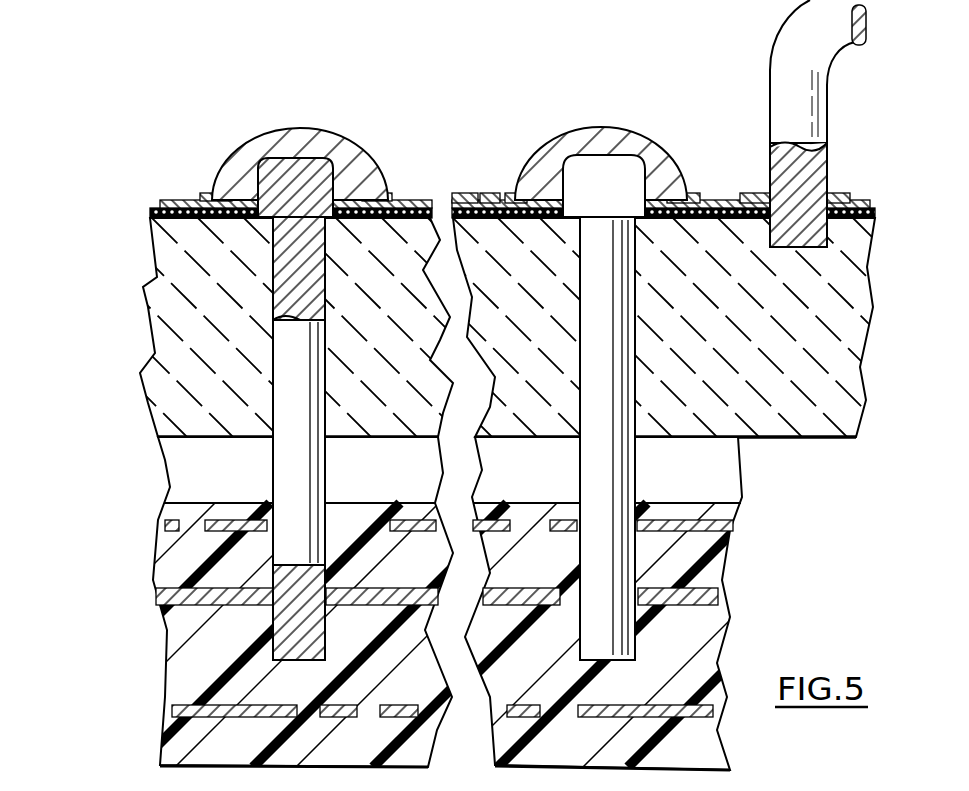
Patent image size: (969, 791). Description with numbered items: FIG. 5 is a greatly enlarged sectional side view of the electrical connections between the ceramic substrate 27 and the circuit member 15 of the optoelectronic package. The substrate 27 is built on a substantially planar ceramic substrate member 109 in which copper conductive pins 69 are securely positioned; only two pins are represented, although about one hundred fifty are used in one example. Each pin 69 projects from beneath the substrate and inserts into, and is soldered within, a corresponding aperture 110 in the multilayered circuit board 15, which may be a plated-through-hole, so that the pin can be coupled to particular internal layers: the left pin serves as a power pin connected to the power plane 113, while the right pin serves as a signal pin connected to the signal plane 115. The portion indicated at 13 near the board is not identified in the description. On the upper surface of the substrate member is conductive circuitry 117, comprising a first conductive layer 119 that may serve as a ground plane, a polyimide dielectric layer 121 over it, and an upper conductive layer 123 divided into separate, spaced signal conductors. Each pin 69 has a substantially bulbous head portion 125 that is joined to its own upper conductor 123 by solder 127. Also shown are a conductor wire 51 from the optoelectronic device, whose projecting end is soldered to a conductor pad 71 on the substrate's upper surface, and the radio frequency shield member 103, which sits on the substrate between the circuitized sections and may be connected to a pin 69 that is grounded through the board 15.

The circuit board 13 is at (446, 603).
The circuit board 15 is at (158, 548).
The substrate 27 is at (151, 211).
The conductor wires 51 is at (775, 45).
The conductive pins 69 is at (273, 473).
The conductor pads 71 is at (760, 194).
The radio frequency shield member 103 is at (843, 195).
The ceramic substrate member 109 is at (147, 305).
The aperture 110 is at (278, 643).
The power plane 113 is at (157, 597).
The signal plane 115 is at (660, 520).
The conductive circuitry 117 is at (443, 130).
The first conductive layer 119 is at (396, 193).
The second dielectric layer 121 is at (454, 194).
The second conductive layer 123 is at (216, 196).
The head portion 125 is at (247, 172).
The solder 127 is at (230, 168).